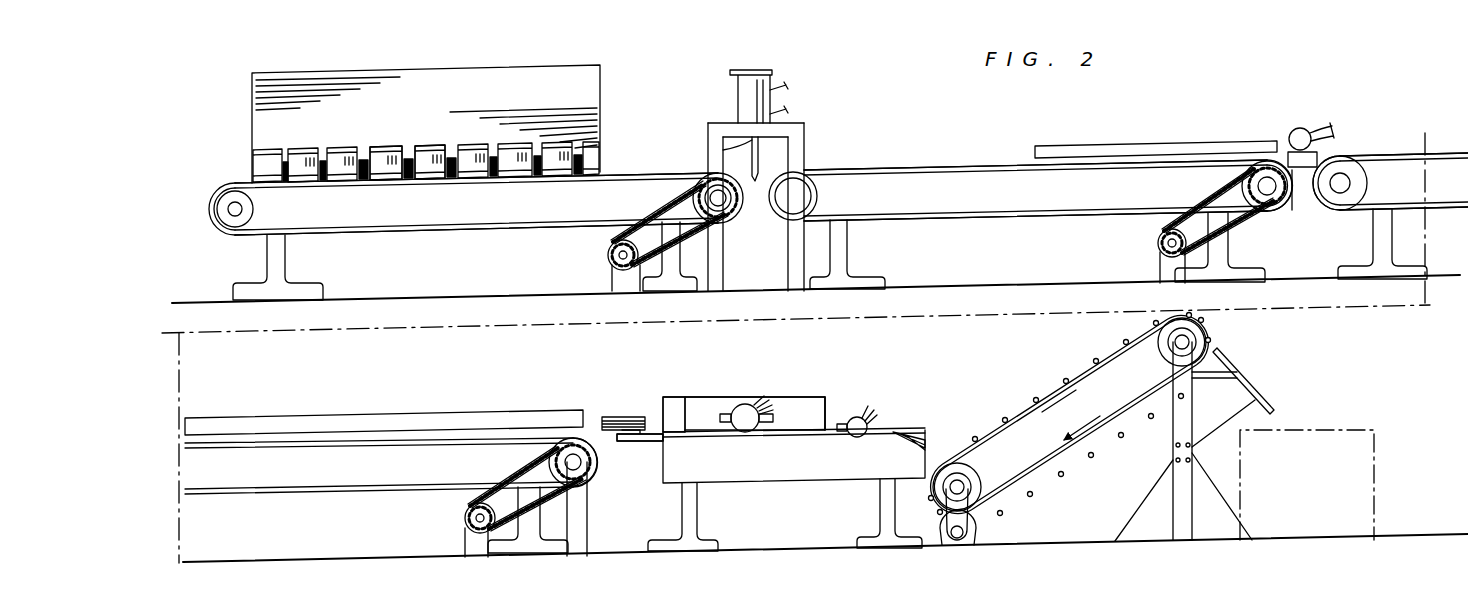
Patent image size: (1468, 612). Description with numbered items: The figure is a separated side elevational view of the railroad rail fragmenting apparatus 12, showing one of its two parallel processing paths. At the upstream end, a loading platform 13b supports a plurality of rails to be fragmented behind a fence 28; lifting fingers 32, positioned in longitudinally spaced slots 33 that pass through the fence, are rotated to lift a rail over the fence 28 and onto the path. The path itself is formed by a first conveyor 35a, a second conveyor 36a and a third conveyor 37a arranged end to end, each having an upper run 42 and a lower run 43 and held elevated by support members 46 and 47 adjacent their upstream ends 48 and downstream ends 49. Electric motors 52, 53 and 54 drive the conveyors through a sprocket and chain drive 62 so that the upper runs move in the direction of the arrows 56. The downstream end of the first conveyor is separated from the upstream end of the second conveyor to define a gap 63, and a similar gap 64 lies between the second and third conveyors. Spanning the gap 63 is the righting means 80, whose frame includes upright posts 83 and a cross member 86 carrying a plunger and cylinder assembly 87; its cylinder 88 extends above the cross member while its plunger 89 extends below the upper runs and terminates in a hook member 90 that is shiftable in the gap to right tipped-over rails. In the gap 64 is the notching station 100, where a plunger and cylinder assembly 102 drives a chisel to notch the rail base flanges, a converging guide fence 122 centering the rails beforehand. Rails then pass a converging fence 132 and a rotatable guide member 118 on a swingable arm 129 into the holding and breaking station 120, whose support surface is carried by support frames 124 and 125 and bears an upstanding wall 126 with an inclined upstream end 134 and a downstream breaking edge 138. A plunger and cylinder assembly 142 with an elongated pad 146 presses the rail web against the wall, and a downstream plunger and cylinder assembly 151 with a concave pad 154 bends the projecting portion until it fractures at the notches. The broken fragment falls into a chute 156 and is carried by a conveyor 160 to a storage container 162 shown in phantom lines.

The railroad rail fragmenting apparatus 12 is at (1347, 77).
The loading platform 13b is at (603, 103).
The fence 28 is at (512, 165).
The lifting finger 32 is at (449, 152).
The slot 33 is at (375, 148).
The first conveyor 35a is at (648, 170).
The second conveyor 36a is at (868, 166).
The third conveyor 37a is at (1397, 152).
The upper run 42 is at (552, 178).
The lower run 43 is at (447, 226).
The support member 46 is at (283, 270).
The support member 47 is at (670, 260).
The upstream end 48 is at (212, 216).
The downstream end 49 is at (727, 232).
The electric motor 52 is at (606, 268).
The electric motor 53 is at (1158, 264).
The electric motor 54 is at (459, 536).
The arrow 56 is at (396, 193).
The sprocket and chain drive 62 is at (663, 206).
The gap 63 is at (752, 202).
The gap 64 is at (1300, 222).
The righting means 80 is at (747, 177).
The upright post 83 is at (716, 292).
The cross member 86 is at (727, 128).
The plunger and cylinder assembly 87 is at (776, 100).
The cylinder 88 is at (752, 88).
The plunger 89 is at (735, 142).
The hook member 90 is at (758, 173).
The notching station 100 is at (1290, 130).
The plunger and cylinder assembly 102 is at (1305, 128).
The rotatable guide member 118 is at (633, 415).
The holding and breaking station 120 is at (804, 440).
The support surface 122 is at (1137, 152).
The support frame 124 is at (690, 512).
The support frame 125 is at (882, 506).
The upstanding wall 126 is at (740, 402).
The swingable arm 129 is at (638, 441).
The converging fence 132 is at (455, 425).
The upstream end of wall 134 is at (676, 400).
The breaking edge 138 is at (828, 408).
The plunger and cylinder assembly 142 is at (742, 435).
The elongated pad 146 is at (775, 408).
The plunger and cylinder assembly 151 is at (856, 440).
The concave pad 154 is at (848, 420).
The chute 156 is at (918, 430).
The conveyor 160 is at (1084, 372).
The storage container 162 is at (1350, 428).